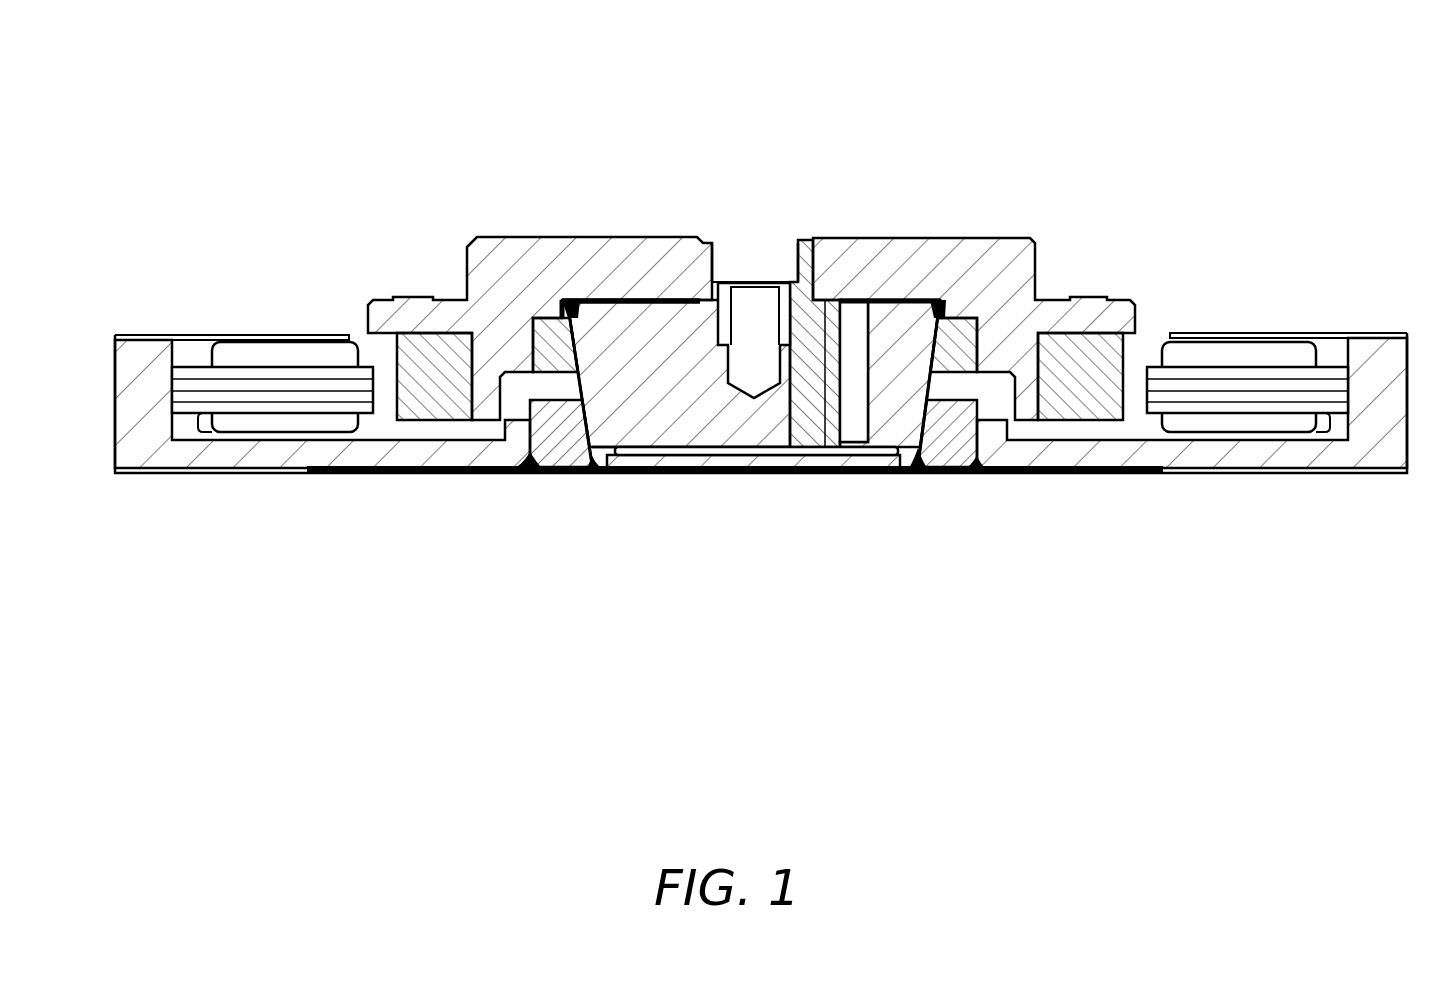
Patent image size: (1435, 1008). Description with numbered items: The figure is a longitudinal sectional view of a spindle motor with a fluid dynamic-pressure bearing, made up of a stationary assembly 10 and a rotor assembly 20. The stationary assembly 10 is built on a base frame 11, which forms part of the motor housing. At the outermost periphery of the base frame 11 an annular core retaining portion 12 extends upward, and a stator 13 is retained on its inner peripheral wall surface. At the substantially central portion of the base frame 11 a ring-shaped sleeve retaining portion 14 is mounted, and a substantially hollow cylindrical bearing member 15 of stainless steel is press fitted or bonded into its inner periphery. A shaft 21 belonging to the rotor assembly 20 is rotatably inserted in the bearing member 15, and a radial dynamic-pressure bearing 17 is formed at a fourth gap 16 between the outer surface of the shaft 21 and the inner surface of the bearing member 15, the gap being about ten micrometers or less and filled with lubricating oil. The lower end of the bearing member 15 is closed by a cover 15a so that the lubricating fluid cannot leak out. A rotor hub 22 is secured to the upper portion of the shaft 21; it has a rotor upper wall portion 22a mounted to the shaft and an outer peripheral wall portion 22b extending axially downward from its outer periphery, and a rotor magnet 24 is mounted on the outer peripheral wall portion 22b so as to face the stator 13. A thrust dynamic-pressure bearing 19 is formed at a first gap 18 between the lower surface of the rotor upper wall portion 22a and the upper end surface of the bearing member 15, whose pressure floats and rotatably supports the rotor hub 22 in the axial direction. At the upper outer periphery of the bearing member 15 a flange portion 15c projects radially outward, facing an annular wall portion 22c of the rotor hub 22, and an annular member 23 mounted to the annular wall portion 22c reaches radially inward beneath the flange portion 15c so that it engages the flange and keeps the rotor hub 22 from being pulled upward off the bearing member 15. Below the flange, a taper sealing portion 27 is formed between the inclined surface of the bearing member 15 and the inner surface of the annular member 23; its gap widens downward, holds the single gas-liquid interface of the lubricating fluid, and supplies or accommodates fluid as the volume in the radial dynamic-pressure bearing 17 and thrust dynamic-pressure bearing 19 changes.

The stationary assembly 10 is at (727, 483).
The base frame 11 is at (1058, 452).
The core retaining portion 12 is at (1382, 400).
The stator 13 is at (1327, 355).
The ring-shaped sleeve retaining portion 14 is at (565, 437).
The bearing member 15 is at (661, 392).
The cover 15a is at (703, 450).
The flange portion 15c is at (572, 300).
The fourth gap 16 is at (665, 345).
The radial dynamic-pressure bearing 17 is at (790, 388).
The first gap 18 is at (850, 302).
The thrust dynamic-pressure bearing 19 is at (603, 305).
The rotor assembly 20 is at (1032, 223).
The shaft 21 is at (778, 455).
The rotor hub 22 is at (968, 238).
The rotor upper wall portion 22a is at (880, 302).
The outer peripheral wall portion 22b is at (1042, 292).
The annular wall portion 22c is at (555, 307).
The annular member 23 is at (535, 373).
The rotor magnet 24 is at (1077, 367).
The taper sealing portion 27 is at (600, 458).